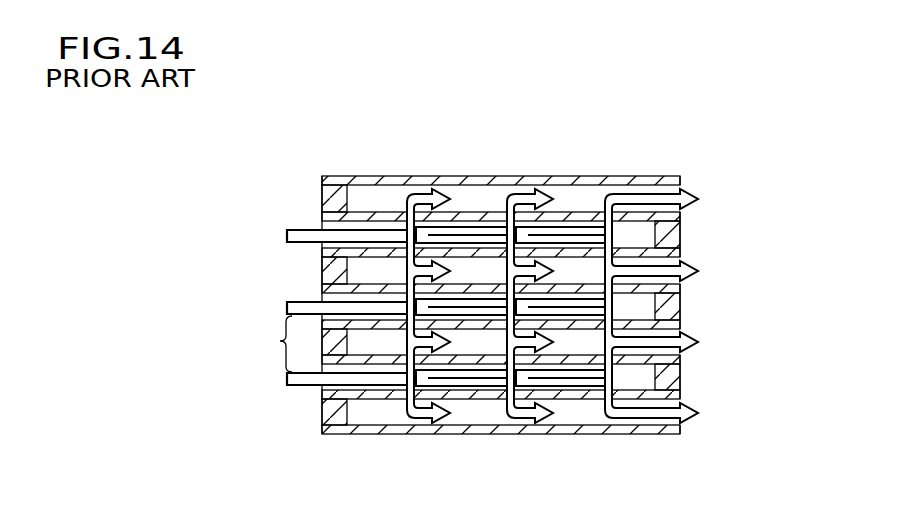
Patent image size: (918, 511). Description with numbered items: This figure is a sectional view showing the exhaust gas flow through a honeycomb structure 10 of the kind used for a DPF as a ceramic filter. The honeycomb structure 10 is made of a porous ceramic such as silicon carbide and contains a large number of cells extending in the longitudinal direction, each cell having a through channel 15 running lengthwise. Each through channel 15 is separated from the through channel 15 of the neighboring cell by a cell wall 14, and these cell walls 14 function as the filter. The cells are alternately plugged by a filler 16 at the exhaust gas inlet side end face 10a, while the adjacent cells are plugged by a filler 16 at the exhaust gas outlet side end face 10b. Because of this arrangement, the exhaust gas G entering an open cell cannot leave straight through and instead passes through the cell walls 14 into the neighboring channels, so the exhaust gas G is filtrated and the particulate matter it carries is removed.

The honeycomb structure 10 is at (684, 156).
The exhaust gas inlet side end face 10a is at (321, 175).
The exhaust gas outlet side end face 10b is at (684, 173).
The cell wall 14 is at (480, 222).
The through channel 15 is at (412, 176).
The filler 16 is at (322, 198).
The exhaust gas G is at (280, 341).